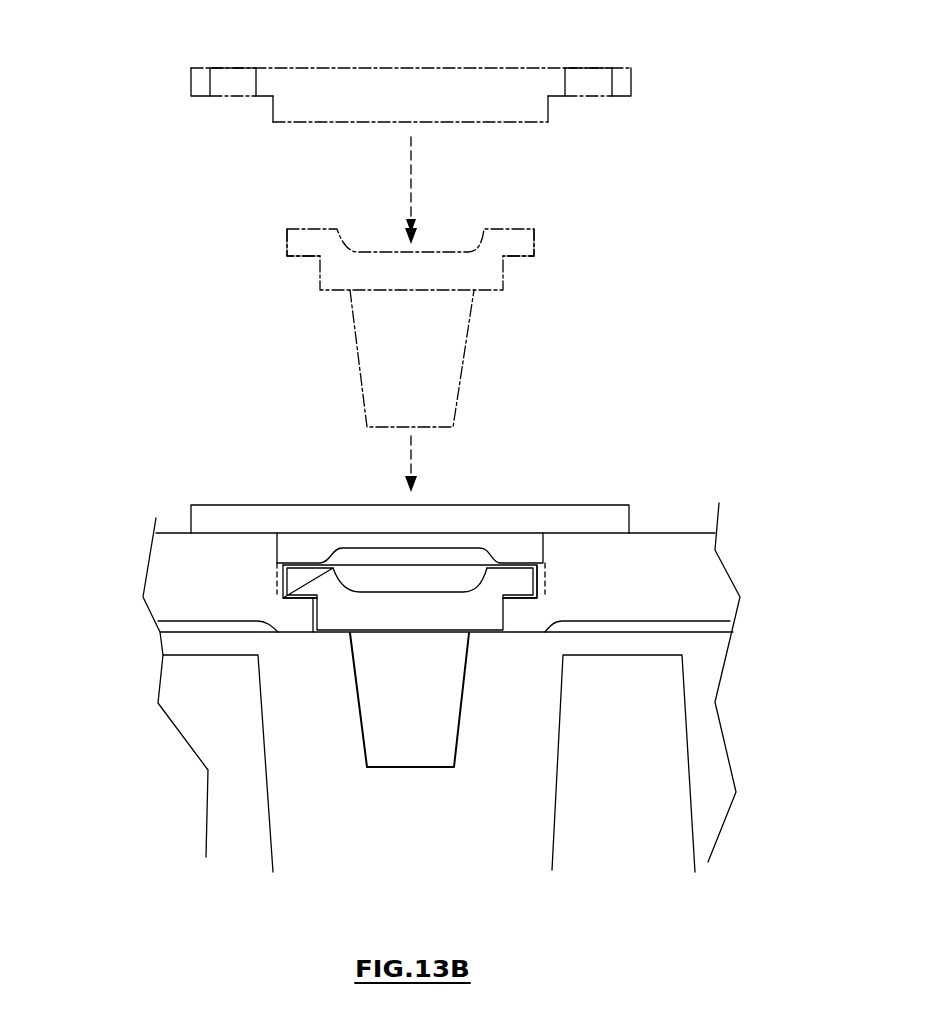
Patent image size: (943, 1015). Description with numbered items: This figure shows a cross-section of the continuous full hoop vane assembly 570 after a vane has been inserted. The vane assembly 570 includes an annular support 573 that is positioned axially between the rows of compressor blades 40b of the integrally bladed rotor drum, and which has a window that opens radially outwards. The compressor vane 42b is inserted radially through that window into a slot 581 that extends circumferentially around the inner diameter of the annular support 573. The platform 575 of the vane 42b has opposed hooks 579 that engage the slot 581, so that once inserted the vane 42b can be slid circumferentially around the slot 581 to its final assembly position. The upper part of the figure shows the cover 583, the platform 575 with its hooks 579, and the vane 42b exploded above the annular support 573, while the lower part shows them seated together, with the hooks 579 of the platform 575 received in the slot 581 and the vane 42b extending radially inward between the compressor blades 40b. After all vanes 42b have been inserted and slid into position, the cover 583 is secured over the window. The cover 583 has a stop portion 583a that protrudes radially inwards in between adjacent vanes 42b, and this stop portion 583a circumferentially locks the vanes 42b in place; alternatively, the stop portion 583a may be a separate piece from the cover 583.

The cover 583 is at (262, 68).
The stop portion 583a is at (552, 122).
The platform 575 is at (317, 230).
The hooks 579 is at (287, 248).
The slot 581 is at (301, 596).
The compressor vane 42b is at (459, 387).
The annular support 573 is at (668, 532).
The vane assembly 570 is at (98, 713).
The compressor blades 40b is at (266, 767).